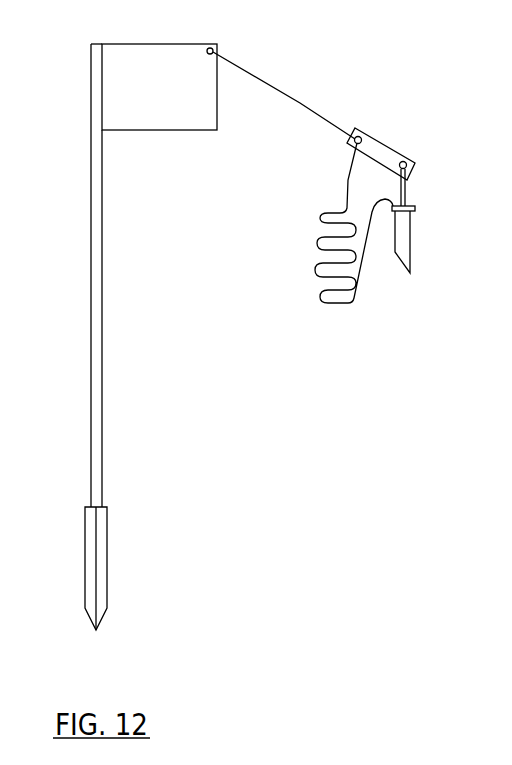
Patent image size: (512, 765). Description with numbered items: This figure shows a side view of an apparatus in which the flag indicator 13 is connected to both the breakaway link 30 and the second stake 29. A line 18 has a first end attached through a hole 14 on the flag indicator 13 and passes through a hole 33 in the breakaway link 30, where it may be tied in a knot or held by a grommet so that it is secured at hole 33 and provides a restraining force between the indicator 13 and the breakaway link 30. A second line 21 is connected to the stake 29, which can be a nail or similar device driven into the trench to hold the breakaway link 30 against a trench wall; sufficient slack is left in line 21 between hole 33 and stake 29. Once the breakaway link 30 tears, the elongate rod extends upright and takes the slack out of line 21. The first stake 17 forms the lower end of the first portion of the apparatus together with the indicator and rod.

The flag indicator 13 is at (152, 63).
The hole 14 is at (213, 46).
The first stake 17 is at (106, 547).
The line 18 is at (278, 91).
The second line 21 is at (323, 306).
The second stake 29 is at (415, 207).
The breakaway link 30 is at (386, 150).
The hole 33 is at (364, 136).